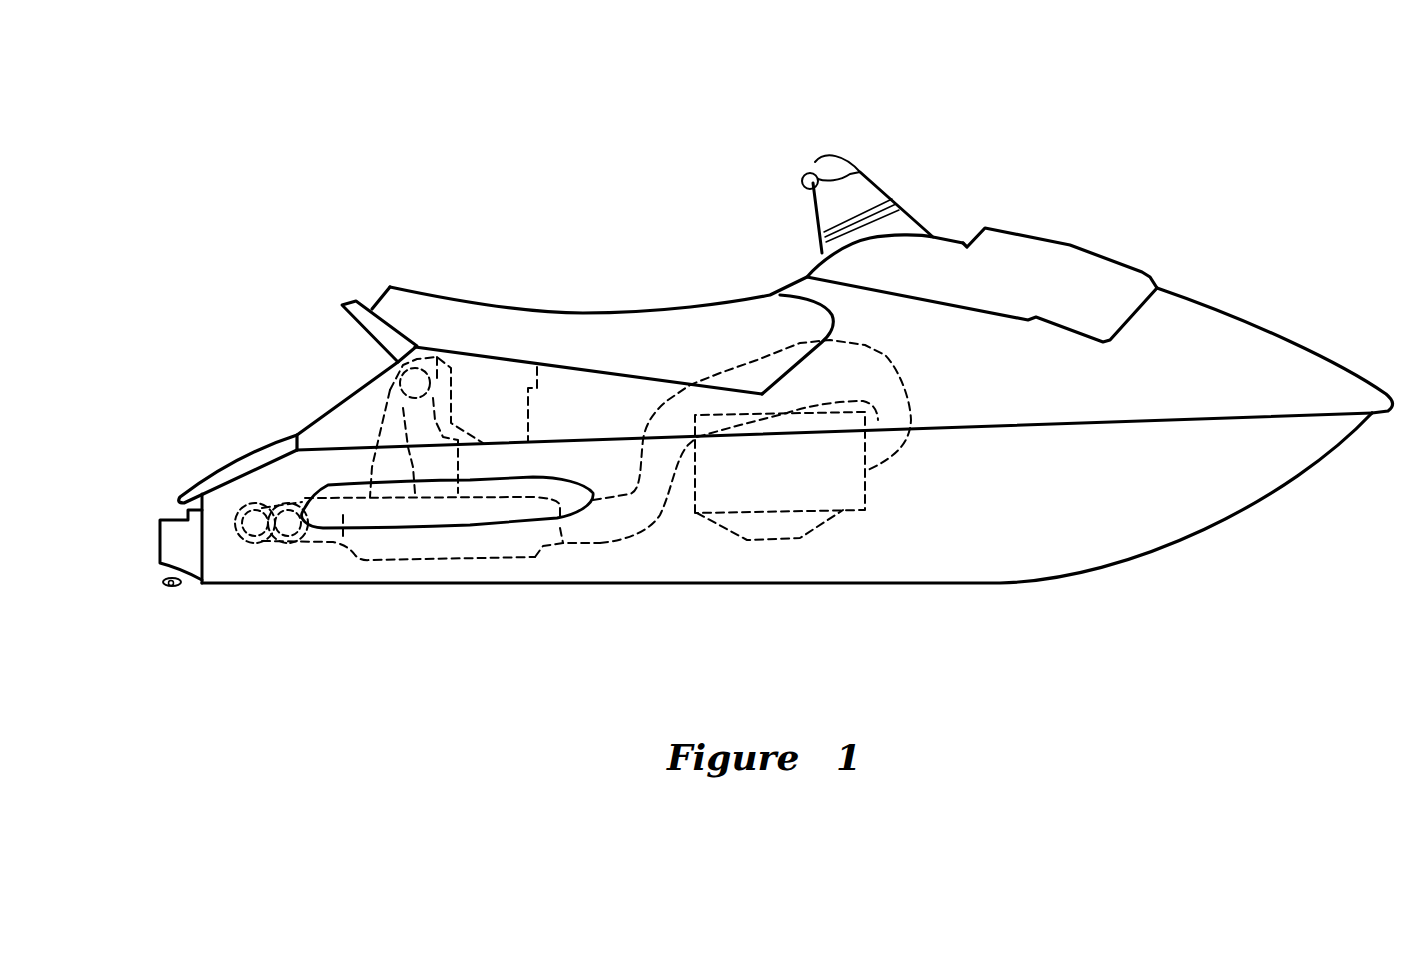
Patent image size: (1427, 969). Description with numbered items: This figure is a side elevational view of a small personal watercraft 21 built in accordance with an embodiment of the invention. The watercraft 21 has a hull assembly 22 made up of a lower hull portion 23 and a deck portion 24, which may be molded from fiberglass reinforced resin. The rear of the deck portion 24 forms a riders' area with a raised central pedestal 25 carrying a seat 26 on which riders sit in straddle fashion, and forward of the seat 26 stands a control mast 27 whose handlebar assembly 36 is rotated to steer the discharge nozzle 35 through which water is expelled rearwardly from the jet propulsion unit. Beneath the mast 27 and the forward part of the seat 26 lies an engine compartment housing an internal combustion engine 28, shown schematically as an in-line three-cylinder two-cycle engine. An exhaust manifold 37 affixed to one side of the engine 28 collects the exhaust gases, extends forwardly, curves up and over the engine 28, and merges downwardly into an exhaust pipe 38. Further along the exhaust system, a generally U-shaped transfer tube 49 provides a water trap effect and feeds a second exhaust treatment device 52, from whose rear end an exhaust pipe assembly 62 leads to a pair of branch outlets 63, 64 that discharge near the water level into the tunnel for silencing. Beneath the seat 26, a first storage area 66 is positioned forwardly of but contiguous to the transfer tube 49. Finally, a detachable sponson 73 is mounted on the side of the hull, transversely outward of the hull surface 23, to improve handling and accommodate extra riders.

The small personal watercraft 21 is at (1165, 253).
The hull assembly 22 is at (1329, 372).
The lower hull portion 23 is at (1308, 467).
The deck portion 24 is at (1227, 328).
The raised central pedestal 25 is at (632, 392).
The seat 26 is at (526, 303).
The control mast 27 is at (863, 170).
The internal combustion engine 28 is at (863, 515).
The discharge nozzle 35 is at (163, 513).
The handlebar assembly 36 is at (840, 163).
The exhaust manifold 37 is at (898, 367).
The exhaust pipe 38 is at (660, 546).
The transfer tube 49 is at (383, 401).
The second exhaust treatment device 52 is at (535, 562).
The exhaust pipe assembly 62 is at (336, 546).
The branch outlet 63 is at (243, 540).
The branch outlet 64 is at (293, 542).
The first storage area 66 is at (537, 412).
The detachable sponson 73 is at (311, 493).